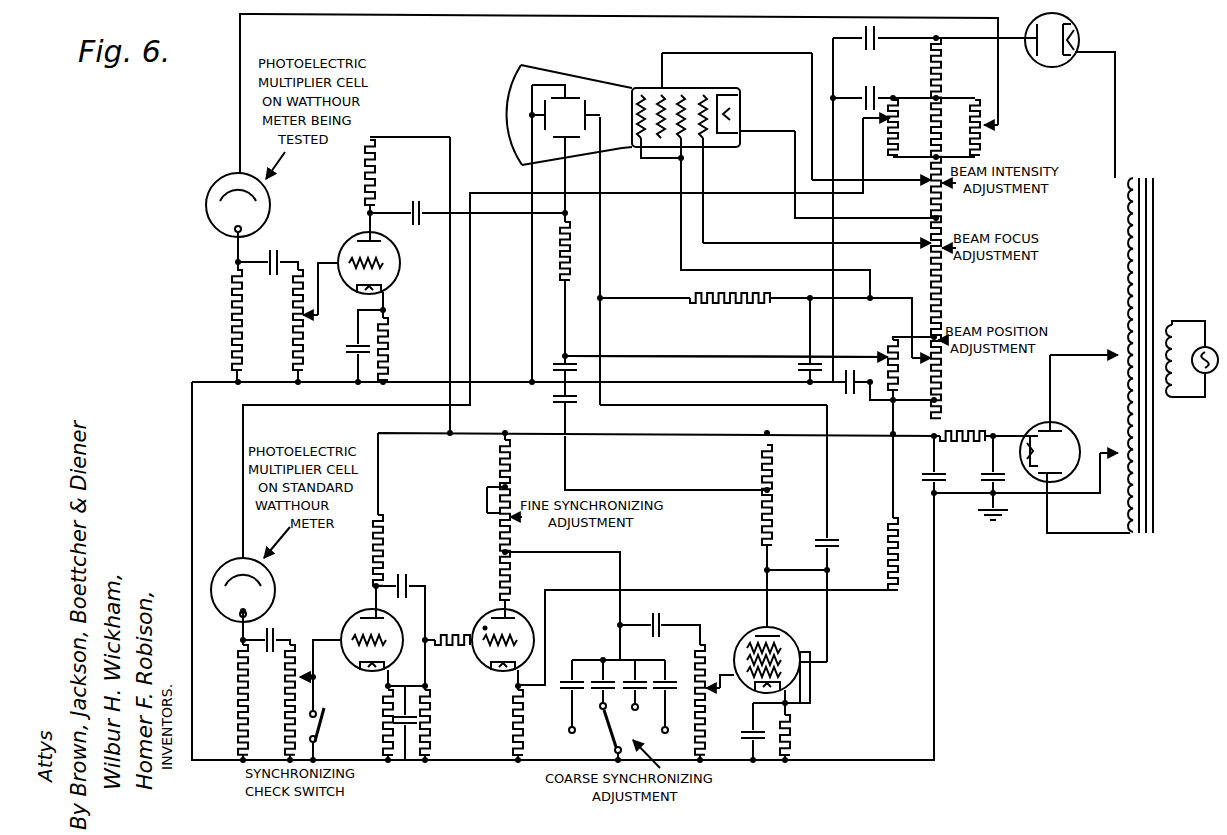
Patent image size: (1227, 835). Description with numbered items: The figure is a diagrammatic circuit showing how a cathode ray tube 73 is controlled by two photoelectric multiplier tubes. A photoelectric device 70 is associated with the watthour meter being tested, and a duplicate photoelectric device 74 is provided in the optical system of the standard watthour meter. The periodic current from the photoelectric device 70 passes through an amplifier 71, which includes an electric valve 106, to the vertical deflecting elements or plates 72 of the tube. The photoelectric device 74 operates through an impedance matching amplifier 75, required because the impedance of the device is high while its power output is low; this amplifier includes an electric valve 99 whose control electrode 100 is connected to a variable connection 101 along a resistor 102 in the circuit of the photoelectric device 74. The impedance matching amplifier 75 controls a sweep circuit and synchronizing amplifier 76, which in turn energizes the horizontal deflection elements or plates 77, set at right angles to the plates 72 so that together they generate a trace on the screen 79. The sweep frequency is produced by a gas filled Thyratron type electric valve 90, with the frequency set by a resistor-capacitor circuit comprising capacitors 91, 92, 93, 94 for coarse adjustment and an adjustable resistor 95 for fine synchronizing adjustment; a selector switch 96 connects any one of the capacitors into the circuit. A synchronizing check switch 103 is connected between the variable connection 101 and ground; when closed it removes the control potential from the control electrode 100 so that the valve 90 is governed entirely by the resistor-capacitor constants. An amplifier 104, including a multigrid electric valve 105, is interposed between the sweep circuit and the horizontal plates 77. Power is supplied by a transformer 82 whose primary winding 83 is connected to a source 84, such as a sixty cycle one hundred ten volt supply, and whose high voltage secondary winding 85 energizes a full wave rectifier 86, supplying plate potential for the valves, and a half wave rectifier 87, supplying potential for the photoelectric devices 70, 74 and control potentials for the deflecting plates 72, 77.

The photoelectric device 70 is at (213, 180).
The amplifier 71 is at (383, 190).
The deflecting elements or plates 72 is at (567, 96).
The cathode ray tube 73 is at (603, 109).
The photoelectric device 74 is at (226, 560).
The impedance matching amplifier 75 is at (389, 603).
The sweep circuit and synchronizing amplifier 76 is at (492, 565).
The horizontal deflection elements or plates 77 is at (541, 126).
The screen 79 is at (510, 86).
The transformer 82 is at (1125, 335).
The primary winding 83 is at (1177, 400).
The source 84 is at (1210, 346).
The high voltage secondary winding 85 is at (1120, 285).
The full wave rectifier 86 is at (1034, 428).
The half wave rectifier 87 is at (1050, 72).
The electric valve 90 is at (517, 612).
The capacitor 91 is at (567, 693).
The capacitor 92 is at (603, 694).
The capacitor 93 is at (645, 680).
The capacitor 94 is at (674, 688).
The adjustable resistor 95 is at (512, 519).
The selector switch 96 is at (613, 736).
The electric valve 99 is at (366, 609).
The control electrode 100 is at (382, 643).
The variable connection 101 is at (307, 672).
The resistor 102 is at (286, 677).
The synchronizing check switch 103 is at (323, 724).
The amplifier 104 is at (808, 618).
The electric valve 105 is at (747, 632).
The electric valve 106 is at (344, 230).